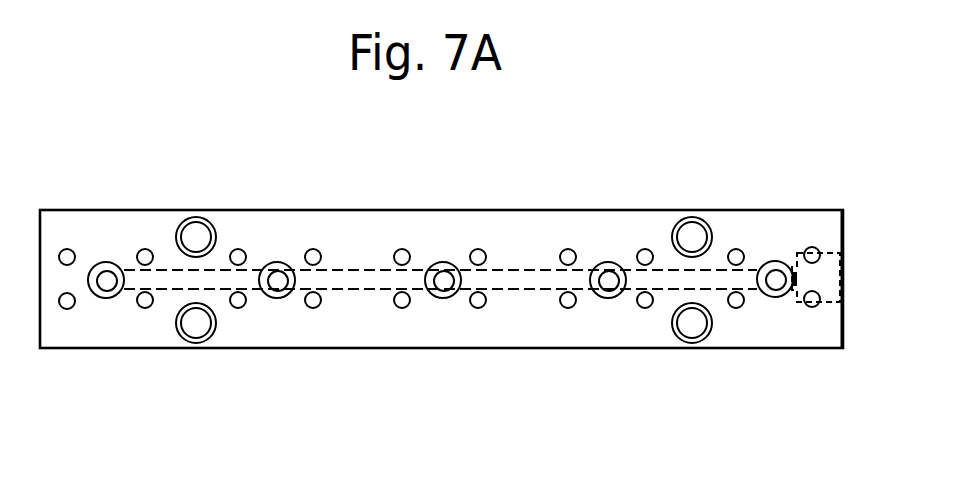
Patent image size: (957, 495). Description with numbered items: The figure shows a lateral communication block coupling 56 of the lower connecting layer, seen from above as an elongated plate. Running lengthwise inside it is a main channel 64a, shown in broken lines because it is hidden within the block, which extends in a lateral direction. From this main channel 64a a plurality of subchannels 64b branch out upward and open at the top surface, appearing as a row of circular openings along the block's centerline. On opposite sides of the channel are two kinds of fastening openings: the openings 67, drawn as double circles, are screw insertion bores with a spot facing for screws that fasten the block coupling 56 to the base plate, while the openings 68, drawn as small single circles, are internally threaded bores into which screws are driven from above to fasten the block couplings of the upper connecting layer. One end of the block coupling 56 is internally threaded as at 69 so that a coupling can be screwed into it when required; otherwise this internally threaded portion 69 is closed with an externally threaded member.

The lateral communication block coupling 56 is at (560, 220).
The screw insertion bore 67 is at (690, 217).
The internally threaded bore 68 is at (68, 256).
The main channel 64a is at (535, 290).
The subchannel 64b is at (107, 282).
The internally threaded portion 69 is at (843, 259).